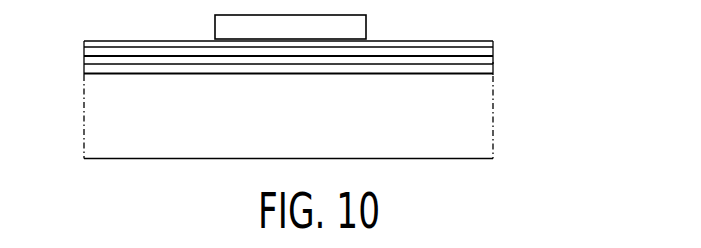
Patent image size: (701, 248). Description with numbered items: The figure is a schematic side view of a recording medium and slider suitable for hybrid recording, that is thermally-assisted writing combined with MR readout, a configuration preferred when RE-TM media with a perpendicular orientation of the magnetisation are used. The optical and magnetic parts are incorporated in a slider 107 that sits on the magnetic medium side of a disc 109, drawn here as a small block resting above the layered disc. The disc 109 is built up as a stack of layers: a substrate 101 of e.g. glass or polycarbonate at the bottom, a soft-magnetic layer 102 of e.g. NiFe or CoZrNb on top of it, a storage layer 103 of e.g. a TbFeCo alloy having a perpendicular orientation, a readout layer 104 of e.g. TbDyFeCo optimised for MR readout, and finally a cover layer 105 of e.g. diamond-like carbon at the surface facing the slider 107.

The substrate 101 is at (482, 135).
The soft-magnetic layer 102 is at (481, 76).
The storage layer 103 is at (482, 59).
The readout layer 104 is at (482, 50).
The cover layer 105 is at (482, 37).
The slider 107 is at (348, 27).
The disc 109 is at (80, 42).